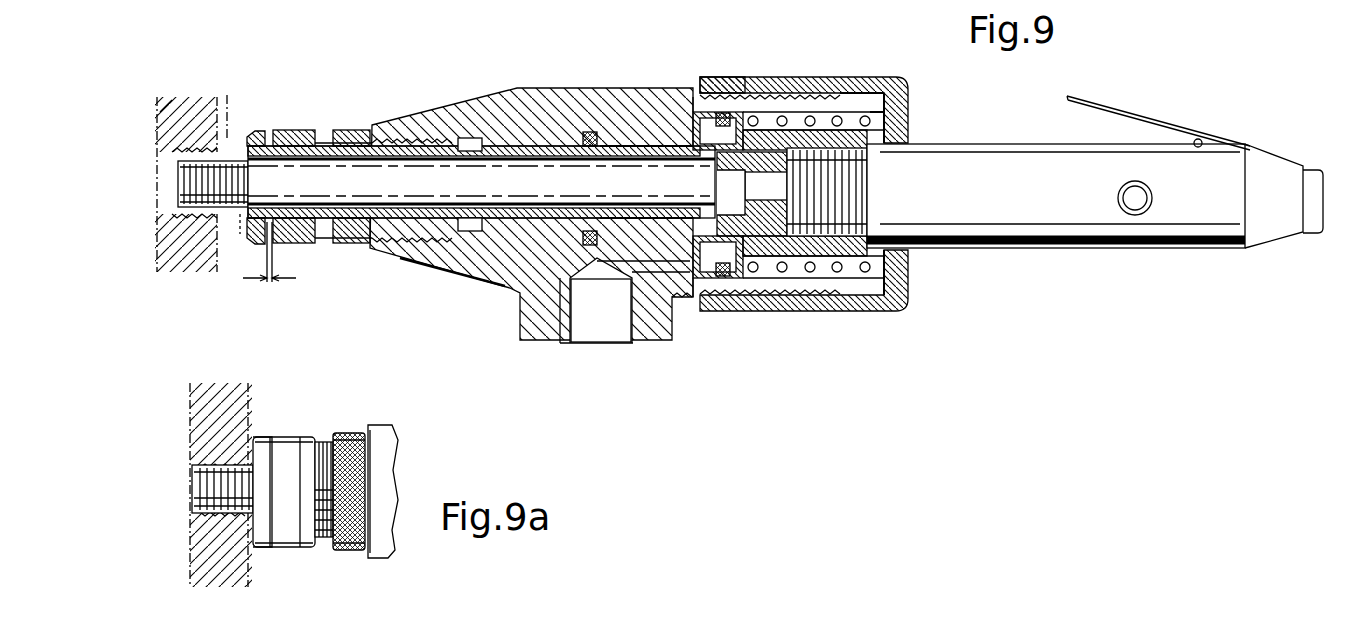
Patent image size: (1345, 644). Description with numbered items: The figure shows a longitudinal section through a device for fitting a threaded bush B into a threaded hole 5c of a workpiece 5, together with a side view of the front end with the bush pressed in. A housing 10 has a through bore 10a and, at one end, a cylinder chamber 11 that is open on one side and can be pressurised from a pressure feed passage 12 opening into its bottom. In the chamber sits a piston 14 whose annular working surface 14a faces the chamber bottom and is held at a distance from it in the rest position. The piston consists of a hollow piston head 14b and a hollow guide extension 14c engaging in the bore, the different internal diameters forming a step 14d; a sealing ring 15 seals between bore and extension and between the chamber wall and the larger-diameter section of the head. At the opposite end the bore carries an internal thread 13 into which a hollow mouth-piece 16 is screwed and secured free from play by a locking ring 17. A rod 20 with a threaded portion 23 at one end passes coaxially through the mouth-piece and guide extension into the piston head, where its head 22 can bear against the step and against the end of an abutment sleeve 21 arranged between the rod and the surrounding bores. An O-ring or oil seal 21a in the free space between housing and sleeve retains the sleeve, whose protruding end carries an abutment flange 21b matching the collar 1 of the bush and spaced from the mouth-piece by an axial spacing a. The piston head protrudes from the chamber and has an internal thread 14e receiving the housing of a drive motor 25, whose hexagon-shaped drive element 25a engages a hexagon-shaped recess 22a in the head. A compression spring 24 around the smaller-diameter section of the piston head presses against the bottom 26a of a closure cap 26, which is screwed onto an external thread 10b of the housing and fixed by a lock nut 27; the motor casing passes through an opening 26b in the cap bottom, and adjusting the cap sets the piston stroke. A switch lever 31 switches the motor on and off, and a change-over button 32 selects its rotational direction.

In FIG. 9, the collar 1 is at (240, 236).
In FIG. 9, the workpiece 5 is at (176, 254).
In FIG. 9a, the workpiece 5 is at (236, 575).
In FIG. 9, the threaded hole 5c is at (190, 98).
In FIG. 9, the housing 10 is at (513, 96).
In FIG. 9a, the housing 10 is at (385, 470).
In FIG. 9, the through bore 10a is at (474, 256).
In FIG. 9, the external thread 10b is at (855, 93).
In FIG. 9, the cylinder chamber 11 is at (702, 290).
In FIG. 9, the pressure feed passage 12 is at (604, 320).
In FIG. 9, the internal thread 13 is at (398, 247).
In FIG. 9a, the internal thread 13 is at (324, 540).
In FIG. 9, the piston 14 is at (852, 292).
In FIG. 9, the annular working surface 14a is at (700, 118).
In FIG. 9, the piston head 14b is at (906, 106).
In FIG. 9, the guide extension 14c is at (612, 146).
In FIG. 9, the step 14d is at (718, 280).
In FIG. 9, the internal thread 14e is at (905, 280).
In FIG. 9, the sealing ring 15 is at (588, 132).
In FIG. 9, the mouth-piece 16 is at (292, 130).
In FIG. 9a, the mouth-piece 16 is at (291, 437).
In FIG. 9, the locking ring 17 is at (350, 130).
In FIG. 9a, the locking ring 17 is at (347, 433).
In FIG. 9, the rod 20 is at (425, 185).
In FIG. 9, the abutment sleeve 21 is at (330, 243).
In FIG. 9, the O-ring or oil seal 21a is at (470, 138).
In FIG. 9, the abutment flange 21b is at (260, 131).
In FIG. 9a, the abutment flange 21b is at (262, 437).
In FIG. 9, the head 22 is at (820, 175).
In FIG. 9, the hexagon-shaped recess 22a is at (722, 195).
In FIG. 9, the threaded portion 23 is at (232, 176).
In FIG. 9a, the threaded portion 23 is at (240, 488).
In FIG. 9, the compression spring 24 is at (892, 100).
In FIG. 9, the drive motor 25 is at (1020, 240).
In FIG. 9, the drive element 25a is at (790, 278).
In FIG. 9, the closure cap 26 is at (782, 78).
In FIG. 9, the bottom 26a is at (908, 262).
In FIG. 9, the opening 26b is at (910, 125).
In FIG. 9, the lock nut 27 is at (710, 78).
In FIG. 9, the switch lever 31 is at (1118, 110).
In FIG. 9, the change-over button 32 is at (1135, 216).
In FIG. 9, the axial spacing a is at (269, 264).
In FIG. 9, the threaded bush B is at (227, 128).